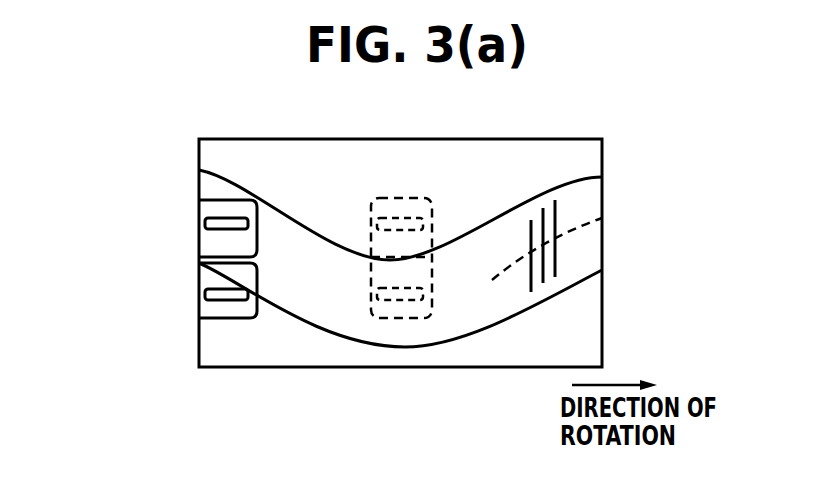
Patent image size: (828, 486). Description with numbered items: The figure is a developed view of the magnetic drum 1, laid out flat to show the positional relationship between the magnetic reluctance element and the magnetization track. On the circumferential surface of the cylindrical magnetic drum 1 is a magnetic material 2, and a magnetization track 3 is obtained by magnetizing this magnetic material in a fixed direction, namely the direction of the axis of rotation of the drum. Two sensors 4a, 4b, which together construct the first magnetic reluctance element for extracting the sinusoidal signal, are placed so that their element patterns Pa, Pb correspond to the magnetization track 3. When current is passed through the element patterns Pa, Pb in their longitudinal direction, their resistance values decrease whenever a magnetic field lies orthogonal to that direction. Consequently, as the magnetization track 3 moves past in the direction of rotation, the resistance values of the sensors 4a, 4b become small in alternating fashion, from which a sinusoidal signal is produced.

The magnetic drum 1 is at (602, 154).
The magnetic material 2 is at (557, 261).
The magnetization track 3 is at (602, 218).
The sensor 4a is at (203, 207).
The sensor 4b is at (205, 311).
The element pattern Pa is at (206, 223).
The element pattern Pb is at (206, 294).